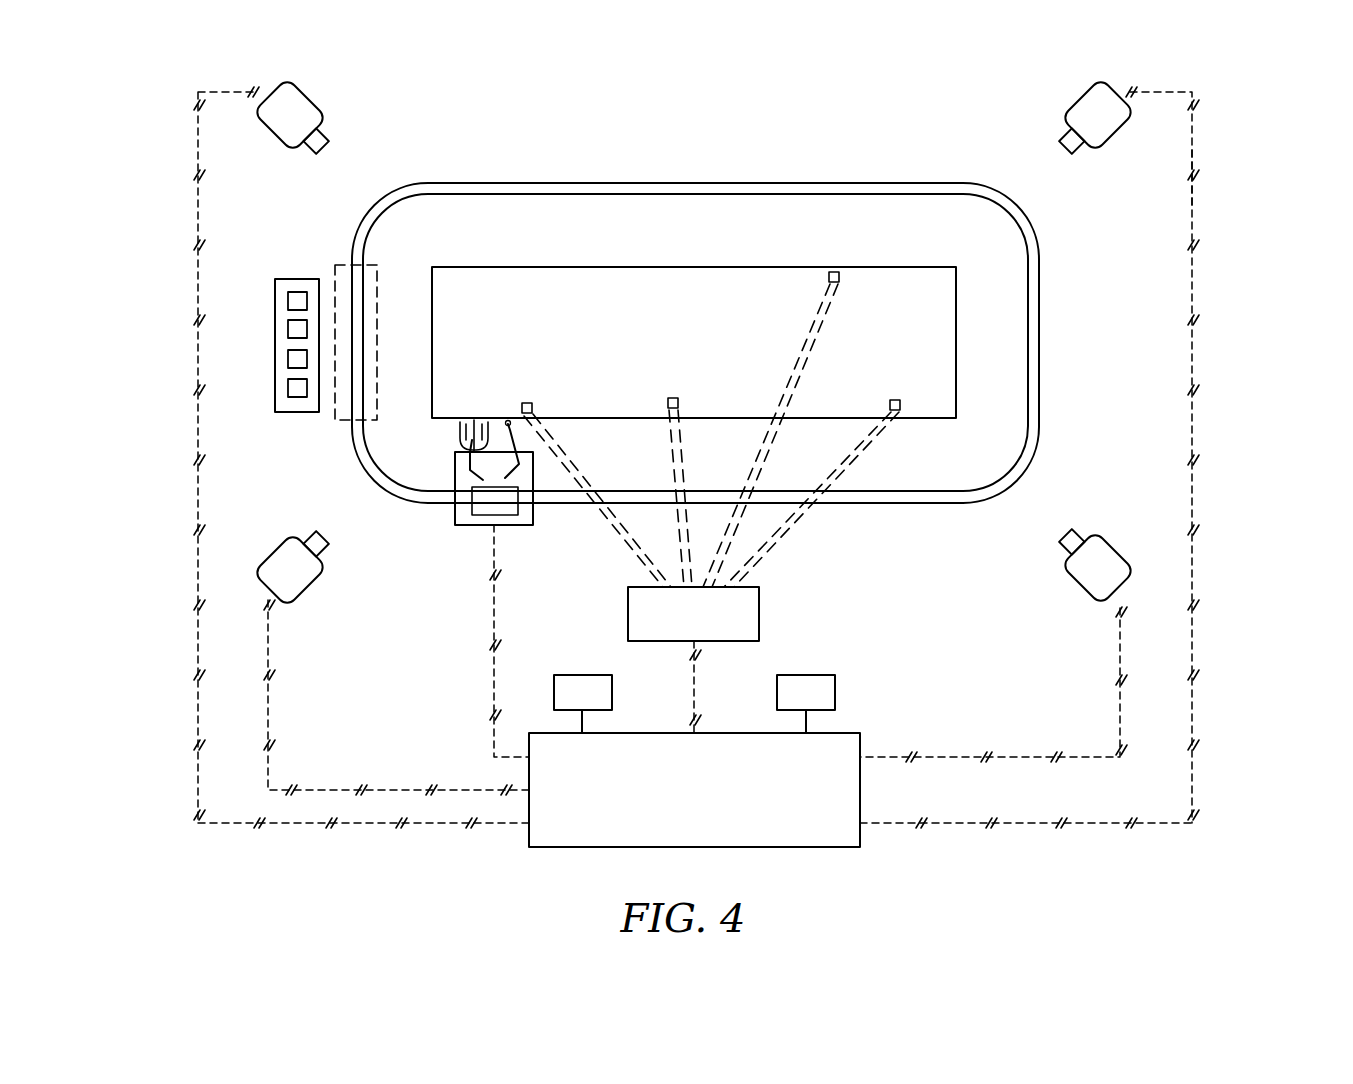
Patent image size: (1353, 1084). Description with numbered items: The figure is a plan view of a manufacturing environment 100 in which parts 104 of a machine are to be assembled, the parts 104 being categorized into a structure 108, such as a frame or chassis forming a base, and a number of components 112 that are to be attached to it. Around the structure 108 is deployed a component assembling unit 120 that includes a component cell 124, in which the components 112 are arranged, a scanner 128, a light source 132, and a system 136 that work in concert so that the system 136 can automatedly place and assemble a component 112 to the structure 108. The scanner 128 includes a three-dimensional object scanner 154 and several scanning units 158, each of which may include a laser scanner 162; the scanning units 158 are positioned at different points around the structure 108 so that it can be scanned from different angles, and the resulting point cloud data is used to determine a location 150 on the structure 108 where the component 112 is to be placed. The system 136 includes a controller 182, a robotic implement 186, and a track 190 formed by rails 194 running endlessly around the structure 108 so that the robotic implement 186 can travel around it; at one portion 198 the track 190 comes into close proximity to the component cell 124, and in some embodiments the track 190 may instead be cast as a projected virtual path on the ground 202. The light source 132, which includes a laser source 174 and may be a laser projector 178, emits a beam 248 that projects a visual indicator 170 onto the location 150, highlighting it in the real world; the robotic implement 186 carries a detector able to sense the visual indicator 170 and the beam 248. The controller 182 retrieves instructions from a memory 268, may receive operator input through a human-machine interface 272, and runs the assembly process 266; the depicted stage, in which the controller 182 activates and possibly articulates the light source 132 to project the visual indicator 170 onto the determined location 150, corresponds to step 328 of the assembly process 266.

The manufacturing environment 100 is at (700, 92).
The parts 104 is at (287, 300).
The structure 108 is at (750, 267).
The component 112 is at (288, 292).
The component assembling unit 120 is at (142, 790).
The component cell 124 is at (290, 284).
The scanner 128 is at (694, 431).
The light source 132 is at (752, 660).
The system 136 is at (530, 647).
The location 150 is at (543, 275).
The 3-dimensional object scanner 154 is at (694, 431).
The scanning units 158 is at (694, 342).
The laser scanner 162 is at (331, 140).
The visual indicator 170 is at (533, 400).
The laser source 174 is at (752, 660).
The laser projector 178 is at (760, 622).
The controller 182 is at (820, 848).
The robotic implement 186 is at (525, 530).
The track 190 is at (663, 183).
The rails 194 is at (783, 194).
The portion of the track 198 is at (375, 265).
The ground 202 is at (814, 557).
The beam 248 is at (578, 458).
The assembly process 266 is at (1258, 108).
The memory 268 is at (579, 675).
The human-machine interface 272 is at (835, 691).
The step 328 is at (1238, 183).